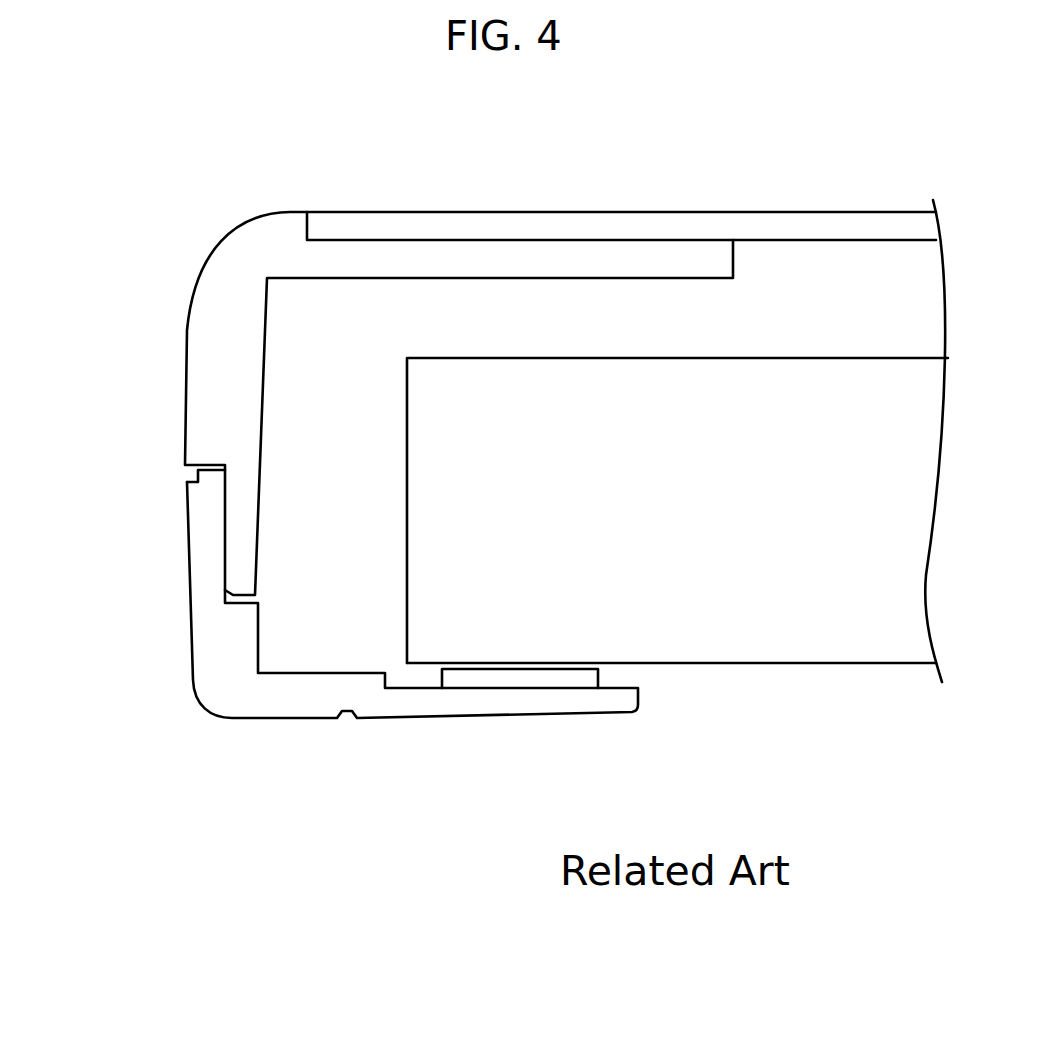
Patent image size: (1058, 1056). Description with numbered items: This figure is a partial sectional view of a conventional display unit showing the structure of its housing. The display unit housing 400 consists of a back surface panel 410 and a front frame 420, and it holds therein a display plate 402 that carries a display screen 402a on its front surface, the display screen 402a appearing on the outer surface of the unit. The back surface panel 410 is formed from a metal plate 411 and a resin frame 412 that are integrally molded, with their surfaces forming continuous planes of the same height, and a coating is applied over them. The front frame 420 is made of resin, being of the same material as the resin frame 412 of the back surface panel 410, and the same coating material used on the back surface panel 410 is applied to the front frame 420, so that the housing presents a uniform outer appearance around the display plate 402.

The display unit housing 400 is at (152, 306).
The back surface panel 410 is at (238, 267).
The metal plate 411 is at (597, 222).
The resin frame 412 is at (212, 295).
The display plate 402 is at (831, 377).
The display screen 402a is at (775, 664).
The front frame 420 is at (205, 644).